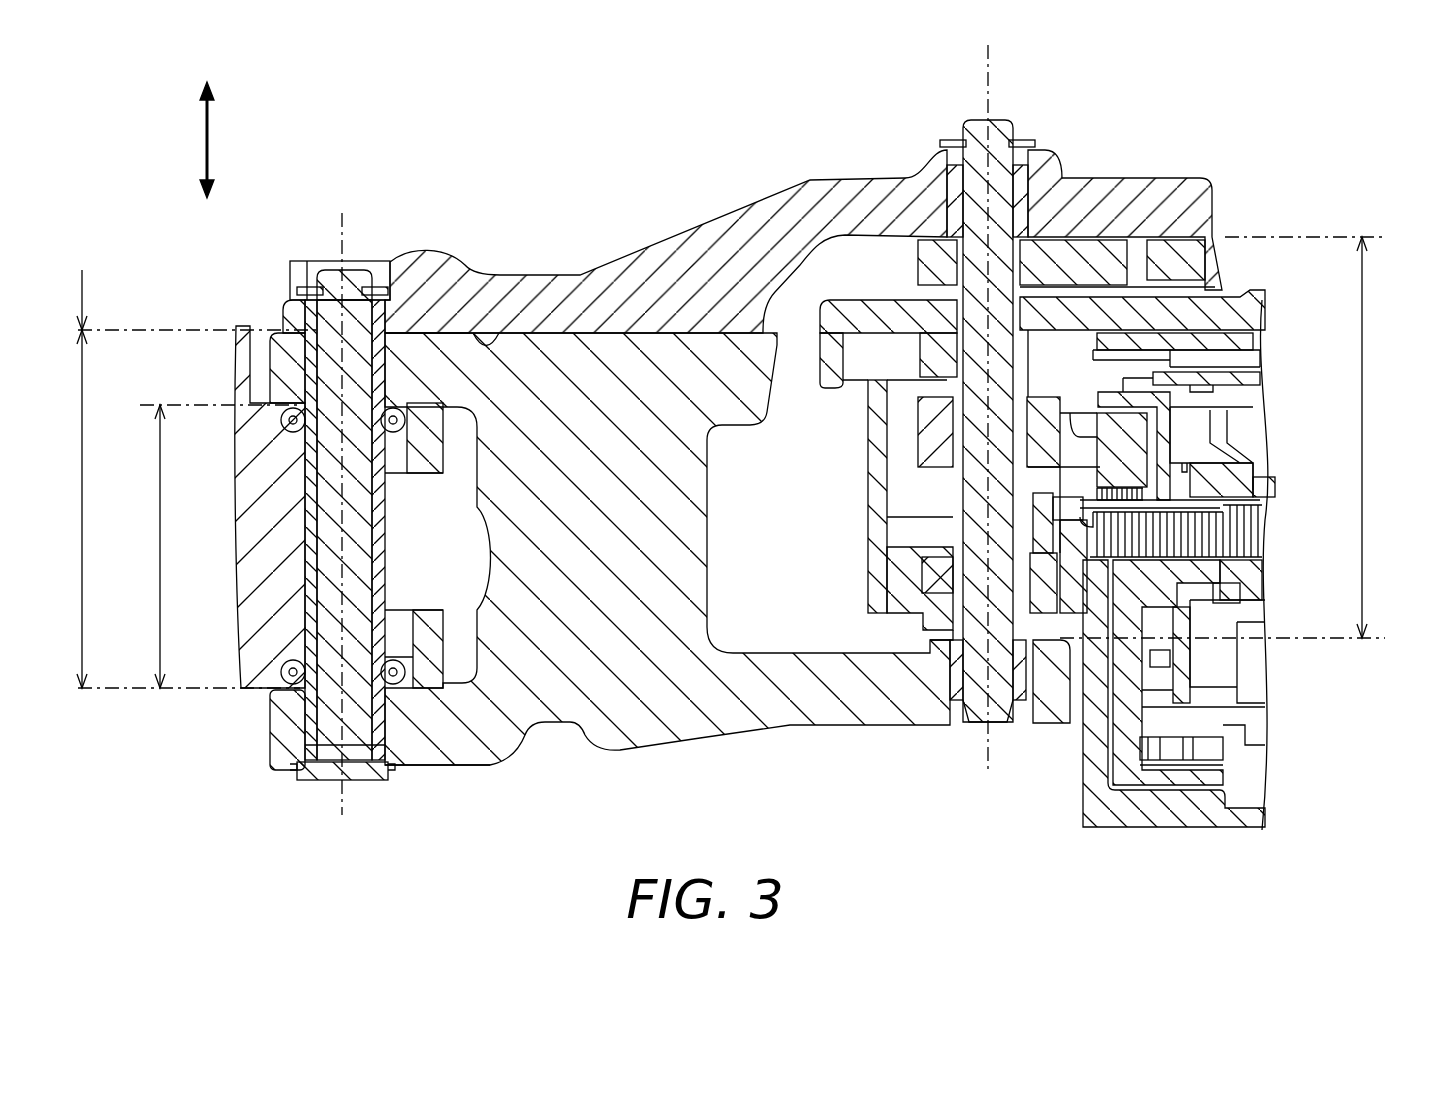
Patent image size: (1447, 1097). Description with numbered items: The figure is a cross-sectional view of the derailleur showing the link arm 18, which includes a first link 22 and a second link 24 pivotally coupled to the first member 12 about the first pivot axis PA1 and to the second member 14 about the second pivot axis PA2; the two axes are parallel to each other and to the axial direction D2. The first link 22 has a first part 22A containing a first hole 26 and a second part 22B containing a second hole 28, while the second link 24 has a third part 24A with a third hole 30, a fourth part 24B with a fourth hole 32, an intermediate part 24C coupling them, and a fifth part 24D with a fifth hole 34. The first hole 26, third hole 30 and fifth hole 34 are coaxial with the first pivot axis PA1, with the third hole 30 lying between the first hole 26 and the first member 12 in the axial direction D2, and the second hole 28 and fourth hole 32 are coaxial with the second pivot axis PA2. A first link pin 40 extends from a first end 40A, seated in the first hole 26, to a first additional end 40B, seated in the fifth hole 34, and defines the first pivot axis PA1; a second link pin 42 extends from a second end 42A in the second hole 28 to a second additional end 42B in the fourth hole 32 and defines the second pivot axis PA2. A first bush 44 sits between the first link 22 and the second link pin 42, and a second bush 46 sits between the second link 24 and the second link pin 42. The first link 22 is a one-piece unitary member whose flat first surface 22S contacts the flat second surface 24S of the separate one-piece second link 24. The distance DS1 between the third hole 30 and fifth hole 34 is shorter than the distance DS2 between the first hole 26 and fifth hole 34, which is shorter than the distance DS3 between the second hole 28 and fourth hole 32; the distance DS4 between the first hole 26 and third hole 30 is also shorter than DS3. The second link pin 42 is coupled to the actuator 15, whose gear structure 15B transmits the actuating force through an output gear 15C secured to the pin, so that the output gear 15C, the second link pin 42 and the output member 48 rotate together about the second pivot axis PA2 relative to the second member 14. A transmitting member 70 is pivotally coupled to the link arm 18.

The first member 12 is at (225, 527).
The second member 14 is at (1205, 850).
The actuator 15 is at (1286, 733).
The gear structure 15B is at (1273, 540).
The output gear 15C is at (1050, 451).
The link arm 18 is at (803, 445).
The first link 22 is at (582, 262).
The first part 22A is at (277, 317).
The second part 22B is at (1100, 255).
The first surface 22S is at (477, 330).
The second link 24 is at (632, 318).
The third part 24A is at (288, 355).
The fourth part 24B is at (1047, 693).
The intermediate part 24C is at (545, 642).
The fifth part 24D is at (290, 720).
The second surface 24S is at (445, 330).
The first hole 26 is at (335, 290).
The second hole 28 is at (1000, 190).
The third hole 30 is at (305, 440).
The fourth hole 32 is at (1017, 675).
The fifth hole 34 is at (325, 725).
The first link pin 40 is at (330, 592).
The first end 40A is at (355, 275).
The first additional end 40B is at (355, 740).
The second link pin 42 is at (1013, 424).
The second end 42A is at (958, 165).
The second additional end 42B is at (980, 687).
The first bush 44 is at (950, 200).
The second bush 46 is at (957, 672).
The output member 48 is at (1165, 255).
The transmitting member 70 is at (1195, 230).
The axial direction D2 is at (207, 140).
The distance DS1 is at (160, 577).
The distance DS2 is at (83, 473).
The distance DS3 is at (1363, 435).
The distance DS4 is at (83, 292).
The first pivot axis PA1 is at (342, 225).
The second pivot axis PA2 is at (988, 80).